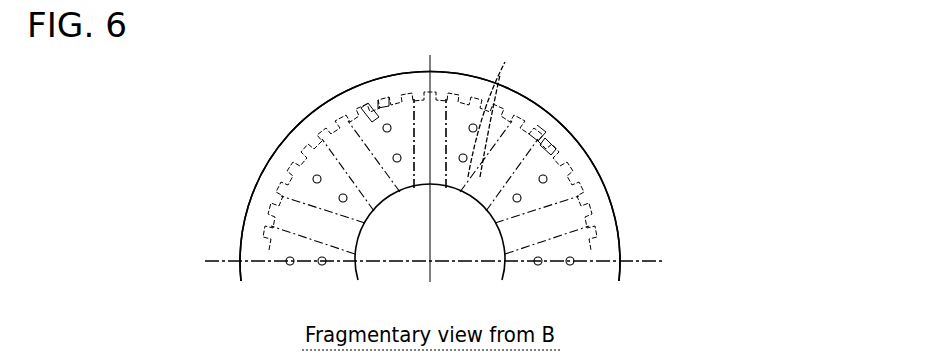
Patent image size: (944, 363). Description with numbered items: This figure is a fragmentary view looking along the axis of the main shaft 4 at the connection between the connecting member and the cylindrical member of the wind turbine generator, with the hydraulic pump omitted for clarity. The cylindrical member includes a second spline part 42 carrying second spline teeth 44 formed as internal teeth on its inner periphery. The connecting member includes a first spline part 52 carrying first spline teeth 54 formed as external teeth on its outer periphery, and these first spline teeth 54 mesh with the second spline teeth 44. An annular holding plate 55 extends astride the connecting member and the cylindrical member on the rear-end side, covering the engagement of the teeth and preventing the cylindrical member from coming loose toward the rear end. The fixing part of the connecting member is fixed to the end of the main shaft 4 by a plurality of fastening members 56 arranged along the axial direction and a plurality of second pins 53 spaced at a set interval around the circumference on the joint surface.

The main shaft 4 is at (550, 306).
The second spline part 42 is at (517, 97).
The second spline teeth 44 is at (366, 110).
The first spline part 52 is at (493, 213).
The second pins 53 is at (454, 100).
The first spline teeth 54 is at (383, 97).
The annular holding plate 55 is at (597, 186).
The fastening members 56 is at (506, 74).